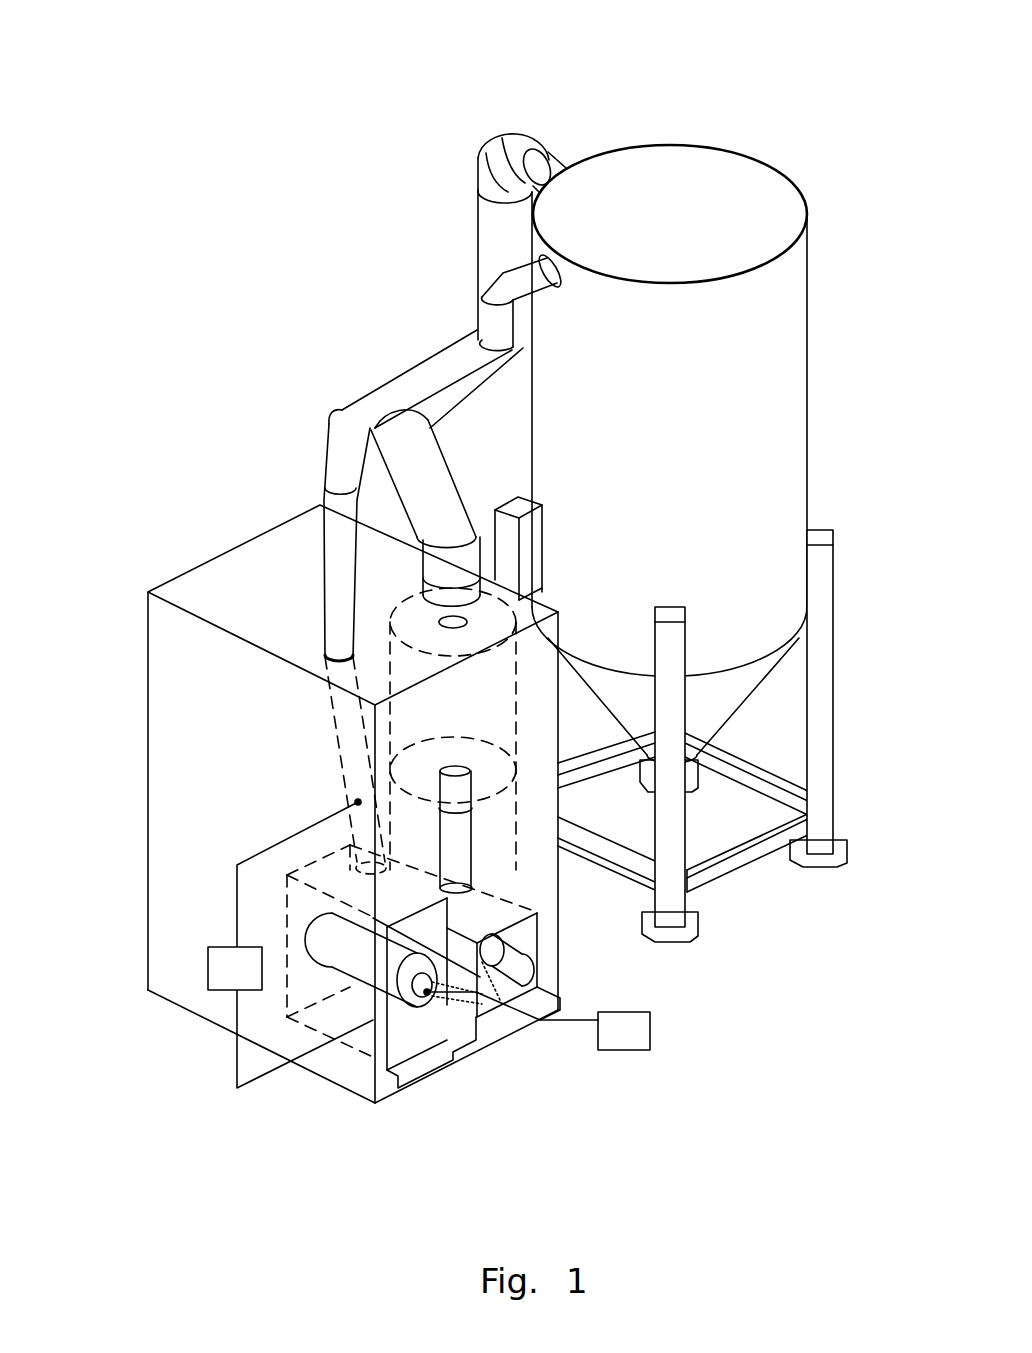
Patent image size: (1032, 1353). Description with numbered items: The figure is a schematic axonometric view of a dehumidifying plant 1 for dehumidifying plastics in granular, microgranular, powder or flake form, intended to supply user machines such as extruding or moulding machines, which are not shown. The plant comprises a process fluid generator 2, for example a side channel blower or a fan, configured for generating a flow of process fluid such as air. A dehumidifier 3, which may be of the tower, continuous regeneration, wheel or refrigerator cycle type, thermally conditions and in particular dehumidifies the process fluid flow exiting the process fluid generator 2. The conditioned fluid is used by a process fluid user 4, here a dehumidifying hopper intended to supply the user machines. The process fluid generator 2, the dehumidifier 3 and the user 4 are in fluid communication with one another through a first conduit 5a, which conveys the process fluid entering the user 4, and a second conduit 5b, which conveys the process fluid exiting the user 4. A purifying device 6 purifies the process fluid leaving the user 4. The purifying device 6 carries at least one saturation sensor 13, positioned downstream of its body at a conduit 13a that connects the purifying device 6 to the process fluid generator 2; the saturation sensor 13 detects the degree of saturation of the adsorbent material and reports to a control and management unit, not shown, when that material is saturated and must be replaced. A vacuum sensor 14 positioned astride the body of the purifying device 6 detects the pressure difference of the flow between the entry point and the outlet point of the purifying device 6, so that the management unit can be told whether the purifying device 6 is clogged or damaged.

The dehumidifying plant 1 is at (293, 50).
The process fluid generator 2 is at (531, 941).
The dehumidifier 3 is at (512, 690).
The process fluid user 4 is at (780, 358).
The first conduit 5a is at (487, 238).
The second conduit 5b is at (347, 457).
The purifying device 6 is at (363, 968).
The saturation sensor 13 is at (652, 1030).
The conduit 13a is at (498, 984).
The vacuum sensor 14 is at (208, 970).